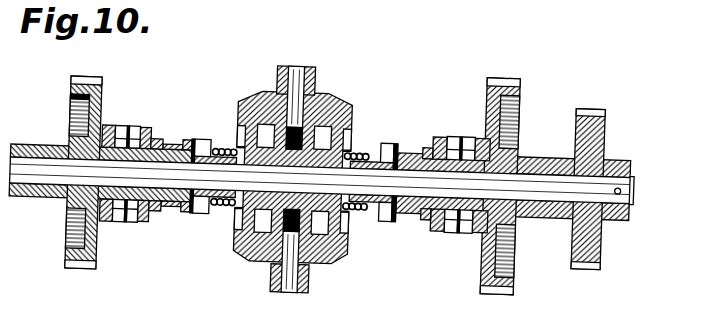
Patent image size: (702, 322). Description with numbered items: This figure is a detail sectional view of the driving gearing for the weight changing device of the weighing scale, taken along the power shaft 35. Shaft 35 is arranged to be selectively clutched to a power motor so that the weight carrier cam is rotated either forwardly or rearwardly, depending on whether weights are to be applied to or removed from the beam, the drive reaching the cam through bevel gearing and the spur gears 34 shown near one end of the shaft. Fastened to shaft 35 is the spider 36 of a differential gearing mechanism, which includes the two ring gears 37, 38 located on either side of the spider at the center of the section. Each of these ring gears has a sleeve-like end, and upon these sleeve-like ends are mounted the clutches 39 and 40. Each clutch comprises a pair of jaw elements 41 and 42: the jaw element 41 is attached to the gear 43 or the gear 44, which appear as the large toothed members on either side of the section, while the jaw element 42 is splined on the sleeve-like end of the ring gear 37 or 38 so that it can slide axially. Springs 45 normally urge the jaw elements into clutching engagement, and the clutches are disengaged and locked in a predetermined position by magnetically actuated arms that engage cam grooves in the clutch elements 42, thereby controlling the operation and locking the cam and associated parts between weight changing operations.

The spur gears 34 is at (602, 113).
The shaft 35 is at (635, 190).
The spider 36 is at (318, 83).
The ring gear 37 is at (234, 242).
The ring gear 38 is at (348, 242).
The clutch 39 is at (462, 235).
The clutch 40 is at (135, 222).
The jaw element 41 is at (110, 125).
The jaw element 42 is at (137, 126).
The gear 43 is at (87, 268).
The gear 44 is at (498, 295).
The springs 45 is at (218, 143).